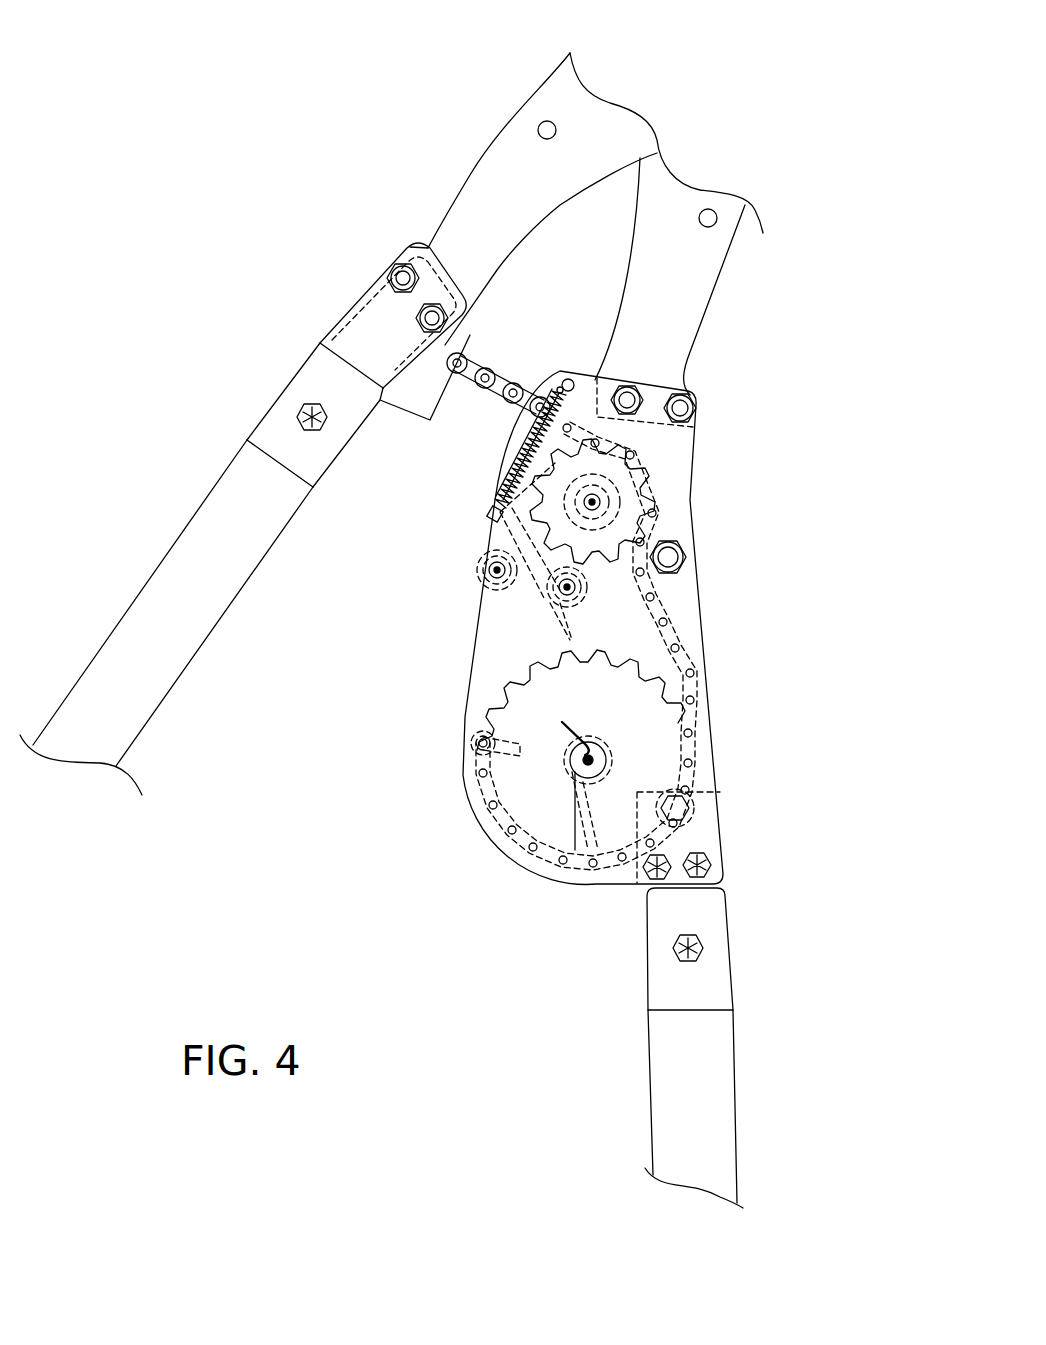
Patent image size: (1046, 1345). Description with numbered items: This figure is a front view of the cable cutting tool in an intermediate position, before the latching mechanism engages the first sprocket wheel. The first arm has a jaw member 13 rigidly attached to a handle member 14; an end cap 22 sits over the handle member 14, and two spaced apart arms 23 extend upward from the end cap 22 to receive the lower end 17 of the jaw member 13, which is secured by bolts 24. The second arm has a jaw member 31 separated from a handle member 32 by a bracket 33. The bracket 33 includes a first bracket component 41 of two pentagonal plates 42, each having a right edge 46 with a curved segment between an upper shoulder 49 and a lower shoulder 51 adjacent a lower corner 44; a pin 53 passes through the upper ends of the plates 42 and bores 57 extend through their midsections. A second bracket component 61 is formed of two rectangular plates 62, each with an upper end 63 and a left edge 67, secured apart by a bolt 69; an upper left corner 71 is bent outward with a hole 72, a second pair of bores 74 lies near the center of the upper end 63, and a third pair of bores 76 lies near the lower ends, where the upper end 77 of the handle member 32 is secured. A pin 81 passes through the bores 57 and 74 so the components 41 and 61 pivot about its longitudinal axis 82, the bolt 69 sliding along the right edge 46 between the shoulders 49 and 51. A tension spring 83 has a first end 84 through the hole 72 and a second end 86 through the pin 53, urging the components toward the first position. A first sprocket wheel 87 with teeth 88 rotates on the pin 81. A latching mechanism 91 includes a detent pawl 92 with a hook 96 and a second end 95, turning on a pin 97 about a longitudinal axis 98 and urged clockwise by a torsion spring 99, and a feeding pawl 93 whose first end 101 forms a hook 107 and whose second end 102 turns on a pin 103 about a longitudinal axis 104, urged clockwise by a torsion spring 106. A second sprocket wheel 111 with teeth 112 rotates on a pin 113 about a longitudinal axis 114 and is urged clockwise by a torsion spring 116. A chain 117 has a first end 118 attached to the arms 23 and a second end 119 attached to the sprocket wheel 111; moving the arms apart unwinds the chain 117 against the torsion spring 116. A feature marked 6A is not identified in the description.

The jaw member 13 is at (515, 130).
The jaw member 31 is at (677, 197).
The lower end 17 is at (433, 243).
The bolts 24 is at (430, 303).
The arms 23 is at (345, 315).
The end cap 22 is at (297, 377).
The handle member 14 is at (212, 497).
The first end 118 is at (417, 388).
The chain 117 is at (463, 352).
The plates 42 is at (595, 378).
The right edge 46 is at (697, 400).
The first bracket component 41 is at (711, 378).
The pin 53 is at (567, 377).
The second end 86 is at (557, 388).
The first sprocket wheel 87 is at (505, 444).
The teeth 88 is at (523, 427).
The pin 81 is at (598, 499).
The longitudinal axis 82 is at (601, 508).
The second pair of bores 74 is at (650, 527).
The upper shoulder 49 is at (687, 510).
The upper end 63 is at (693, 553).
The bores 57 is at (720, 547).
The bolt 69 is at (673, 557).
The lower shoulder 51 is at (683, 593).
The hook 96 is at (683, 612).
The longitudinal axis 98 is at (572, 592).
The lower corner 44 is at (612, 628).
The torsion spring 99 is at (568, 638).
The longitudinal axis 114 is at (594, 761).
The pin 113 is at (603, 772).
The upper end 77 is at (707, 837).
The third pair of bores 76 is at (590, 777).
The detent pawl 92 is at (465, 722).
The second end 95 is at (460, 748).
The second end 119 is at (453, 813).
The left edge 67 is at (477, 825).
The teeth 112 is at (497, 860).
The second sprocket wheel 111 is at (550, 813).
The plates 62 is at (523, 840).
The torsion spring 116 is at (570, 880).
The arm section 6A is at (587, 890).
The second bracket component 61 is at (620, 905).
The handle member 32 is at (692, 1092).
The upper left corner 71 is at (490, 537).
The pin 97 is at (562, 596).
The first end 84 is at (493, 502).
The tension springs 83 is at (507, 475).
The hook 107 is at (480, 505).
The first end 101 is at (480, 518).
The hole 72 is at (490, 533).
The bracket 33 is at (345, 564).
The torsion spring 106 is at (480, 547).
The longitudinal axis 104 is at (497, 570).
The pin 103 is at (473, 587).
The second end 102 is at (493, 573).
The feeding pawl 93 is at (445, 660).
The latching mechanism 91 is at (526, 596).